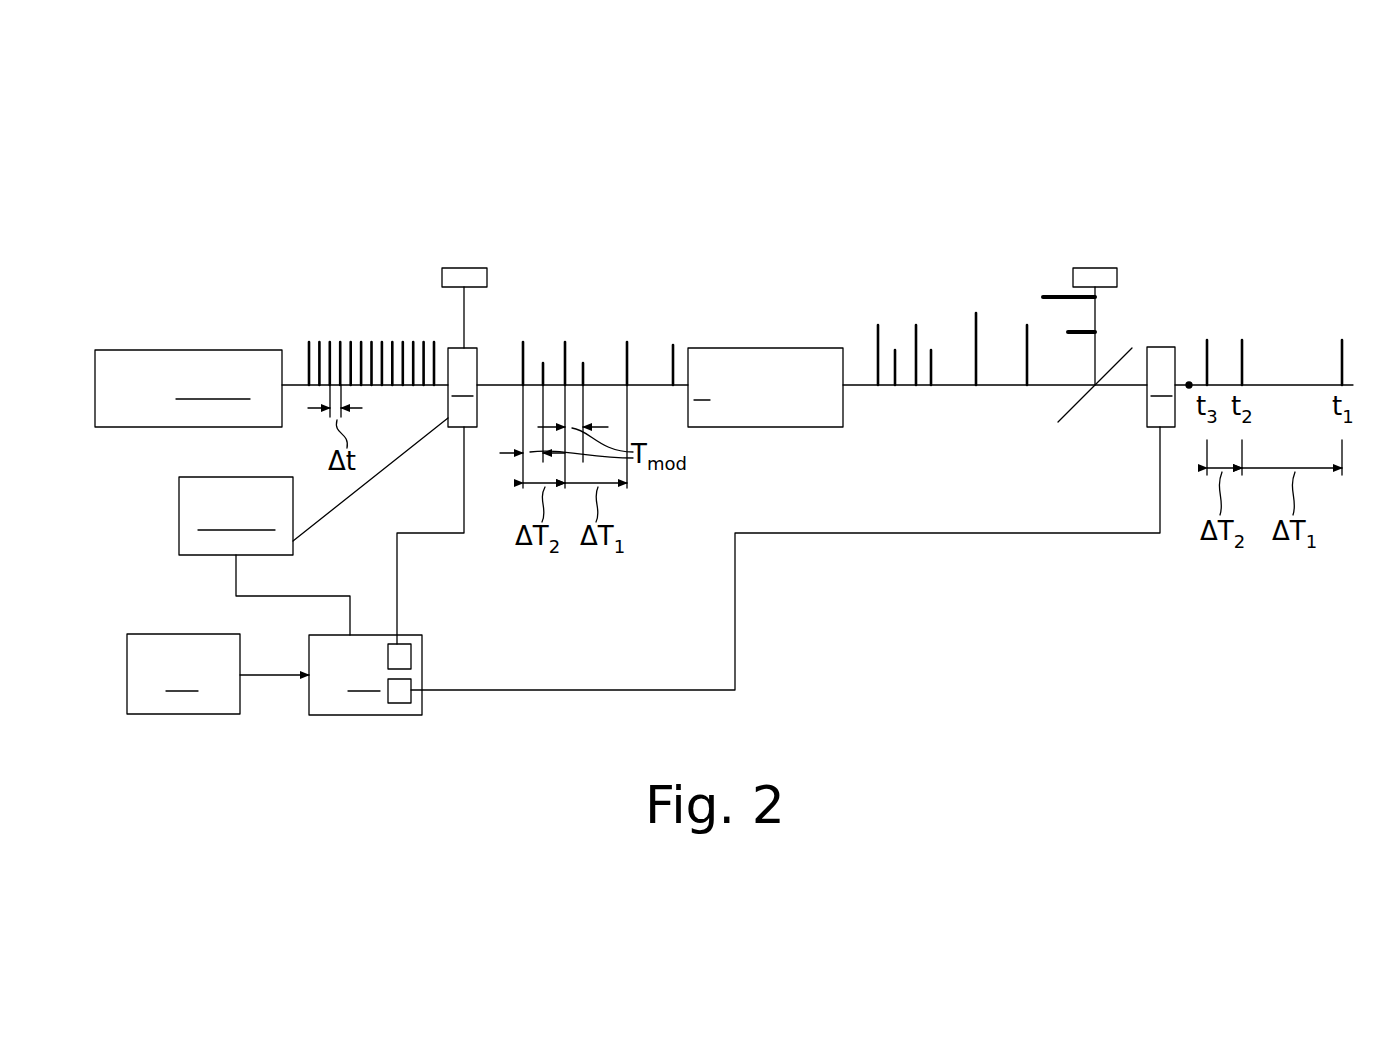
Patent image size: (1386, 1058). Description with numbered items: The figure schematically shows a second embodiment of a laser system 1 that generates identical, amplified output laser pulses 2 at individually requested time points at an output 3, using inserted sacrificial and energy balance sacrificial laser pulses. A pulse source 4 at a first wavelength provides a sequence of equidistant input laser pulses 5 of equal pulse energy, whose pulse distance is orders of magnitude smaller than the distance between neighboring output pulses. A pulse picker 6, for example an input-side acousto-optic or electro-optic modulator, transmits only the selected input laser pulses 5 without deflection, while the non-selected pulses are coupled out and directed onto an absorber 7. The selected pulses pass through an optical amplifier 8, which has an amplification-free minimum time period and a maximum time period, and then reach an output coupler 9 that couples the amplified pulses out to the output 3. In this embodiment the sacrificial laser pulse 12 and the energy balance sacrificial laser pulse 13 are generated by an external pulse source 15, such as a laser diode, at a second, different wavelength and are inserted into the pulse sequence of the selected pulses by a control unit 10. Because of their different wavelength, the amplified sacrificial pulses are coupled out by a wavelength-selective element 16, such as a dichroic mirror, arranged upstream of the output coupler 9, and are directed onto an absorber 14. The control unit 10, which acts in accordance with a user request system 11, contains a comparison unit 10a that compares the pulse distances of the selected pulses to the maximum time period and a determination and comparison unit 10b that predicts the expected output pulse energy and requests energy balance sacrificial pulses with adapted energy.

The laser system 1 is at (177, 283).
The amplified output laser pulses 2 is at (1342, 340).
The output 3 is at (1190, 392).
The pulse source 4 is at (188, 388).
The input laser pulses 5 is at (320, 342).
The pulse picker 6 is at (462, 387).
The absorber 7 is at (464, 268).
The optical amplifier 8 is at (765, 387).
The output coupler 9 is at (1161, 387).
The control unit 10 is at (365, 675).
The comparison unit 10a is at (411, 657).
The determination and comparison unit 10b is at (411, 693).
The user request system 11 is at (183, 674).
The sacrificial laser pulse 12 is at (627, 342).
The energy balance sacrificial laser pulse 13 is at (583, 363).
The absorber 14 is at (1103, 268).
The external pulse source 15 is at (236, 516).
The wavelength-selective element 16 is at (1120, 355).